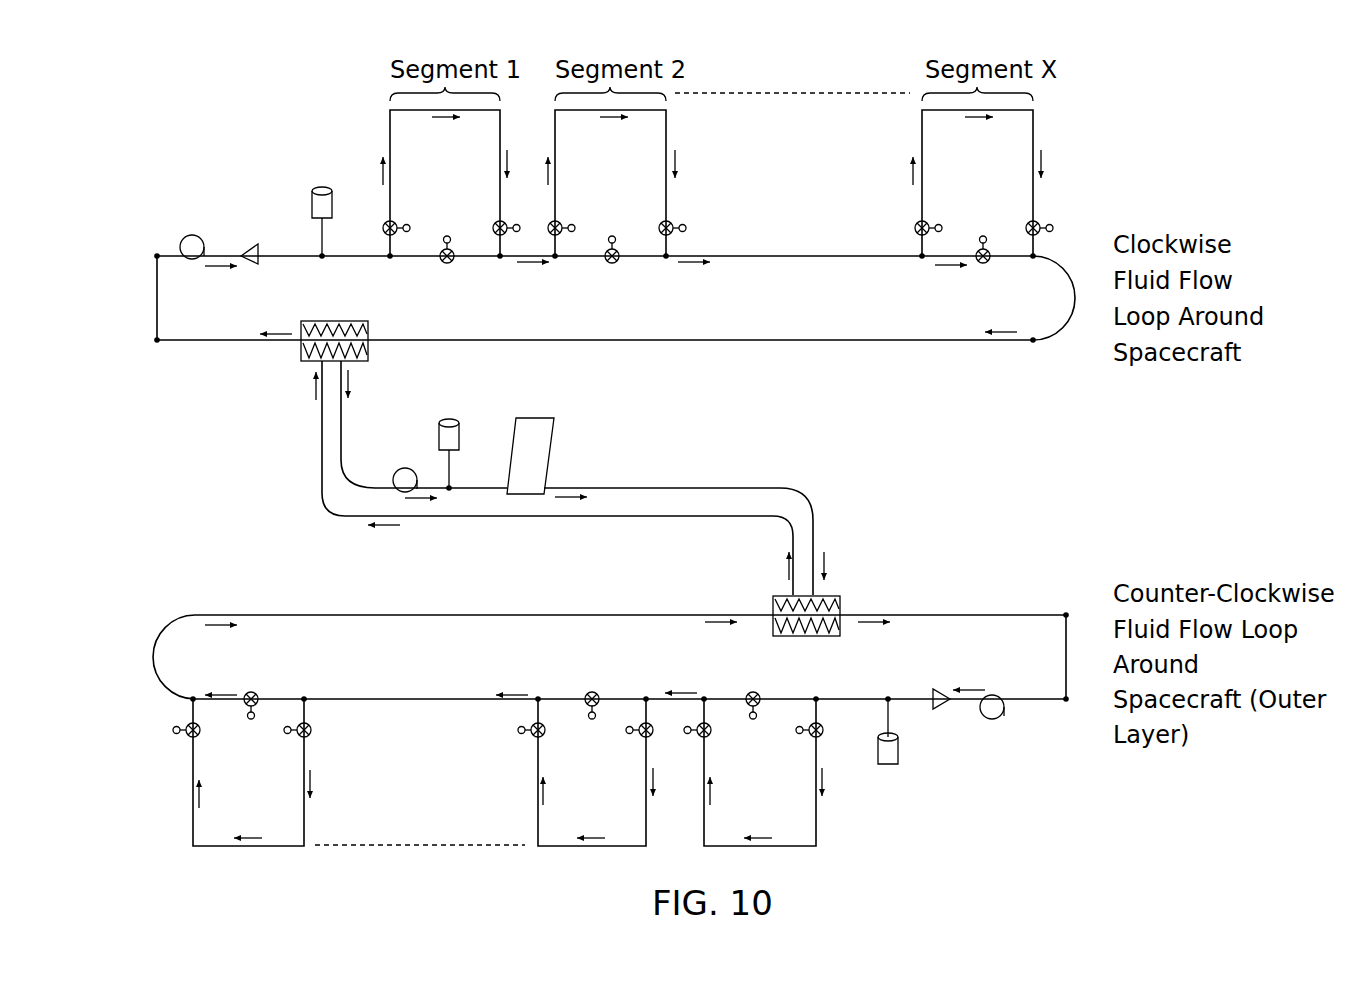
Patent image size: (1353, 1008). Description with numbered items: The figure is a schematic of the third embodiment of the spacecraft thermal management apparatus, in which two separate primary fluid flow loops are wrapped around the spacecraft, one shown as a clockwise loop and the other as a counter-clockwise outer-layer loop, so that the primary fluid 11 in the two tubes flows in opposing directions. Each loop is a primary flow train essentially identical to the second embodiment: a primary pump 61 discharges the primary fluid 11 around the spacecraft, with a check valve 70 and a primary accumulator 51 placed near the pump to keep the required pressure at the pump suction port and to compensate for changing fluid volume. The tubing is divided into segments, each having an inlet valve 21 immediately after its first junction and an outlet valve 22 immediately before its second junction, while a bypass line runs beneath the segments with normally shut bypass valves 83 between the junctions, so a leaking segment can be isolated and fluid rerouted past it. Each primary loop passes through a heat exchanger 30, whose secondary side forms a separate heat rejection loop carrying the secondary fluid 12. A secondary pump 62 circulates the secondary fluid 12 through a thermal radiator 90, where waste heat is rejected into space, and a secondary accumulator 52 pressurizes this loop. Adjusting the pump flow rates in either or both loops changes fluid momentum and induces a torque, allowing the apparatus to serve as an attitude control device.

The primary fluid 11 is at (1022, 327).
The secondary fluid 12 is at (385, 526).
The inlet valve 21 is at (386, 220).
The outlet valve 22 is at (506, 220).
The heat exchanger 30 is at (300, 355).
The primary accumulator 51 is at (313, 193).
The secondary accumulator 52 is at (456, 426).
The primary pump 61 is at (188, 236).
The secondary pump 62 is at (407, 468).
The check valve 70 is at (252, 243).
The bypass valve 83 is at (452, 233).
The thermal radiator 90 is at (540, 415).